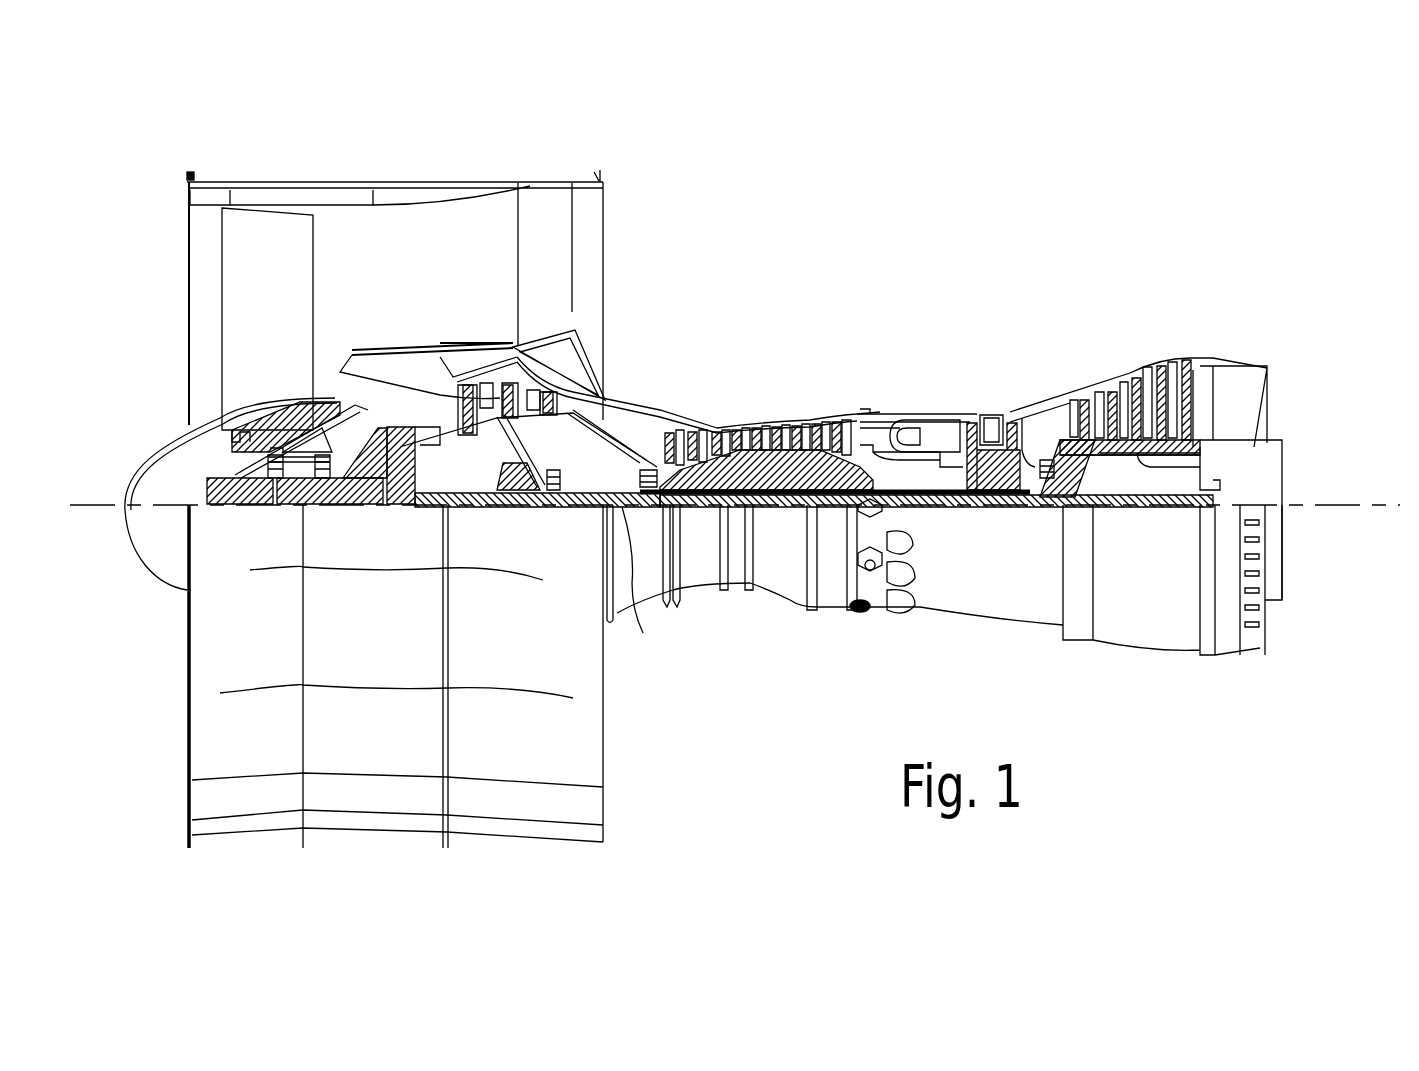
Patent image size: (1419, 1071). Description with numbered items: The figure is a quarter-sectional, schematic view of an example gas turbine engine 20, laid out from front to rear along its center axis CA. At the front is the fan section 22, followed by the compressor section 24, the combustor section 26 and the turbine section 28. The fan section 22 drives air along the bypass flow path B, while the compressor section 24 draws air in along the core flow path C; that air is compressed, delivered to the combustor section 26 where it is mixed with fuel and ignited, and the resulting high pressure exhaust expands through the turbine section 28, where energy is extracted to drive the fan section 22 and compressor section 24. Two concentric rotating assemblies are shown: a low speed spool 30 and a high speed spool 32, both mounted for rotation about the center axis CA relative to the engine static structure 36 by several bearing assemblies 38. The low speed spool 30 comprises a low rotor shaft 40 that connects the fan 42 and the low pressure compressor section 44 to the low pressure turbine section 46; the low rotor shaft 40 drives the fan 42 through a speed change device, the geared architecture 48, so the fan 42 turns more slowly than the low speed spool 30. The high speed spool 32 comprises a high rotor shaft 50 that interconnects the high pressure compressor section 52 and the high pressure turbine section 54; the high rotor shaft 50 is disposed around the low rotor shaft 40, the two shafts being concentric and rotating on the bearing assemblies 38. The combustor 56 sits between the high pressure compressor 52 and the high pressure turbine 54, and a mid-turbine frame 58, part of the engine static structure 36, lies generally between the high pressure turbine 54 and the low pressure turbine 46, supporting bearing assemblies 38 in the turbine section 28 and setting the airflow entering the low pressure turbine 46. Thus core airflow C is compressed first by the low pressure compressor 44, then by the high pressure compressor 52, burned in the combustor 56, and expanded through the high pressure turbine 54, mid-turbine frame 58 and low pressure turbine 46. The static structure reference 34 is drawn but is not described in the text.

The gas turbine engine 20 is at (1102, 188).
The fan section 22 is at (420, 149).
The compressor section 24 is at (845, 292).
The combustor section 26 is at (967, 293).
The turbine section 28 is at (1218, 293).
The low speed spool 30 is at (777, 512).
The high speed spool 32 is at (813, 470).
The engine static structure 34 is at (1200, 475).
The engine static structure 36 is at (833, 612).
The bearing assemblies 38 is at (273, 505).
The low rotor shaft 40 is at (643, 633).
The fan 42 is at (282, 292).
The low pressure compressor section 44 is at (530, 397).
The low pressure turbine section 46 is at (1137, 382).
The geared architecture 48 is at (402, 505).
The high rotor shaft 50 is at (915, 488).
The high pressure compressor section 52 is at (733, 470).
The high pressure turbine section 54 is at (993, 412).
The combustor 56 is at (907, 440).
The mid-turbine frame 58 is at (1040, 396).
The bypass flow path B is at (455, 253).
The core flow path C is at (395, 383).
The center axis CA is at (1360, 505).